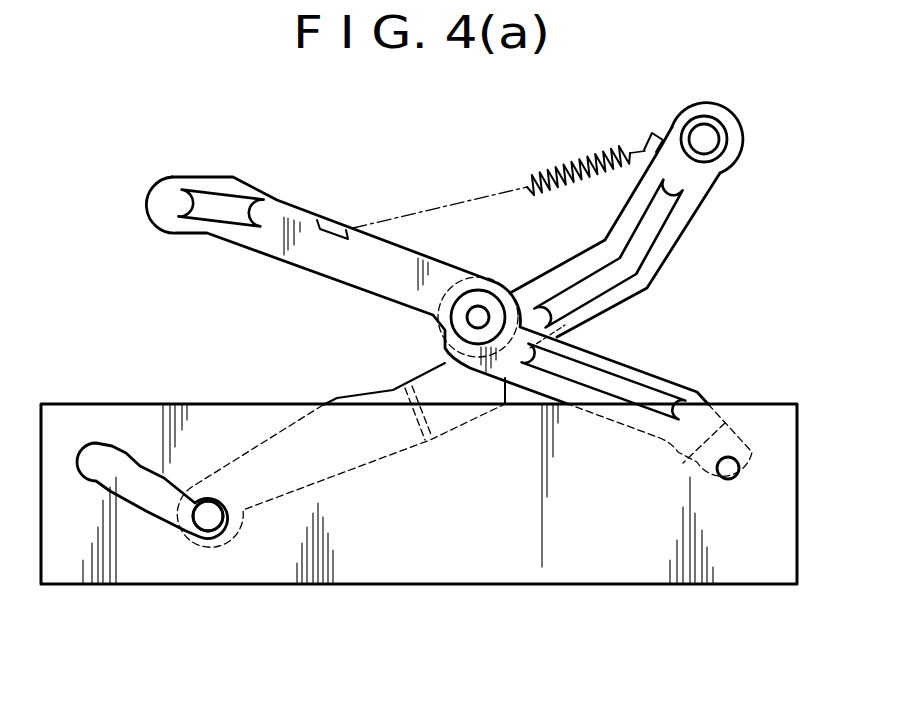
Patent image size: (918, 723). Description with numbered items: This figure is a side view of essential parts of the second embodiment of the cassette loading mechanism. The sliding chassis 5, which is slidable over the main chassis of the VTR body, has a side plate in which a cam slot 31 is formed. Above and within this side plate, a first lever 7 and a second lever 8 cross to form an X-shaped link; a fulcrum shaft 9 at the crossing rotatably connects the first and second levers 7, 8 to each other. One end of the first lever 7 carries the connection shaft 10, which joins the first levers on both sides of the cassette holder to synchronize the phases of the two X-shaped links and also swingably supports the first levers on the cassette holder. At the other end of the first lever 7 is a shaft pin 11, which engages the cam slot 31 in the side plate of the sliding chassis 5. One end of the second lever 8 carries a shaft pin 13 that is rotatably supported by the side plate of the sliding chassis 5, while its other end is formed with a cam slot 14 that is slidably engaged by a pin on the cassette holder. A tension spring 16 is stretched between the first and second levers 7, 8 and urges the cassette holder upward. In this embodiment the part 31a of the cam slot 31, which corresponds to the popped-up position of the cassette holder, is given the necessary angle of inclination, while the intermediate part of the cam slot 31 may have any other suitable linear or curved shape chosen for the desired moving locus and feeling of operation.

The sliding chassis 5 is at (562, 572).
The first lever 7 is at (315, 427).
The second lever 8 is at (289, 218).
The fulcrum shaft 9 is at (467, 318).
The connection shaft 10 is at (706, 137).
The shaft pin 11 is at (207, 500).
The shaft pin 13 is at (737, 468).
The cam slot 14 is at (247, 203).
The tension spring 16 is at (577, 160).
The cam slot 31 is at (155, 510).
The part of cam slot 31a is at (203, 525).